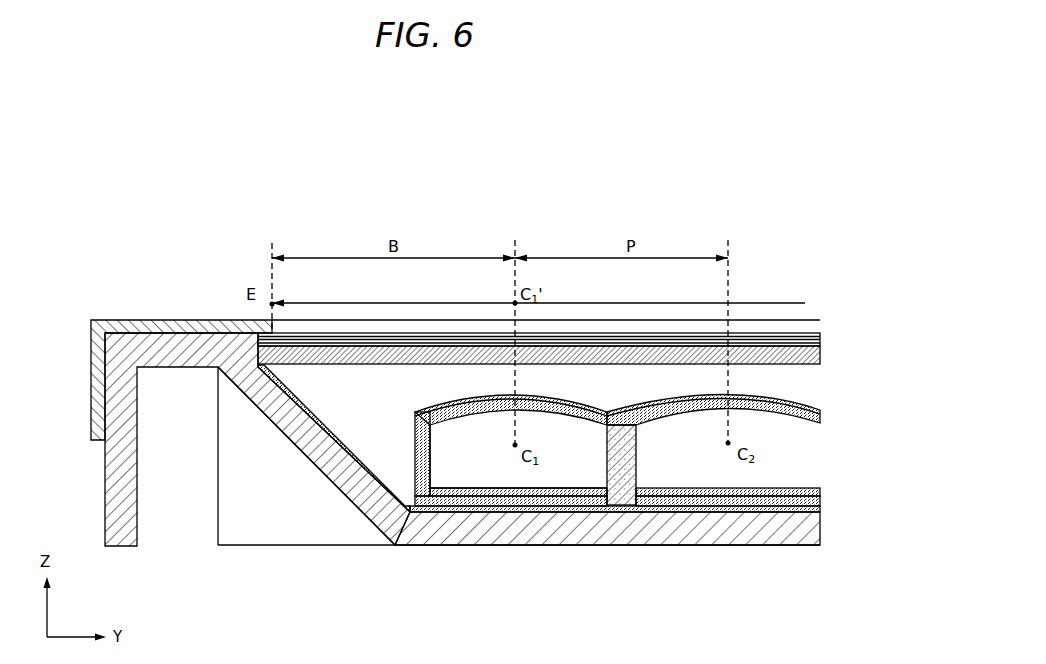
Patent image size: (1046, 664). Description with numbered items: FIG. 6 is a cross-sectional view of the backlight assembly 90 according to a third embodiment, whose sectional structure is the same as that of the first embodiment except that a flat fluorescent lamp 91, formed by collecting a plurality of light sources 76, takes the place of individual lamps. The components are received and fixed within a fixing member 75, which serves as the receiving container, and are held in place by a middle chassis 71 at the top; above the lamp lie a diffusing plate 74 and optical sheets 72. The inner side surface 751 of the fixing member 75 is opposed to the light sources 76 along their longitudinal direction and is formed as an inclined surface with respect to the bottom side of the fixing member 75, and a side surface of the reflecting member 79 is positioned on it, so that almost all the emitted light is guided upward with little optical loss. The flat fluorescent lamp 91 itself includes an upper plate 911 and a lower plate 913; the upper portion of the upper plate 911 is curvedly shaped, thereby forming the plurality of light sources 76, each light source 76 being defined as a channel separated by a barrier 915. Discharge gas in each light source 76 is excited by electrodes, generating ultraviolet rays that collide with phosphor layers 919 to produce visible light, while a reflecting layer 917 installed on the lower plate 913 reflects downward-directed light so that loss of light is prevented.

The backlight assembly 90 is at (529, 213).
The middle chassis 71 is at (90, 370).
The optical sheets 72 is at (828, 333).
The diffusing plate 74 is at (818, 358).
The fixing member 75 is at (105, 495).
The inner side surface 751 is at (316, 458).
The light source 76 is at (478, 478).
The reflecting member 79 is at (813, 510).
The flat fluorescent lamp 91 is at (798, 397).
The upper plate 911 is at (413, 455).
The lower plate 913 is at (715, 512).
The barrier 915 is at (622, 495).
The reflecting layer 917 is at (535, 496).
The phosphor layer 919 is at (570, 490).